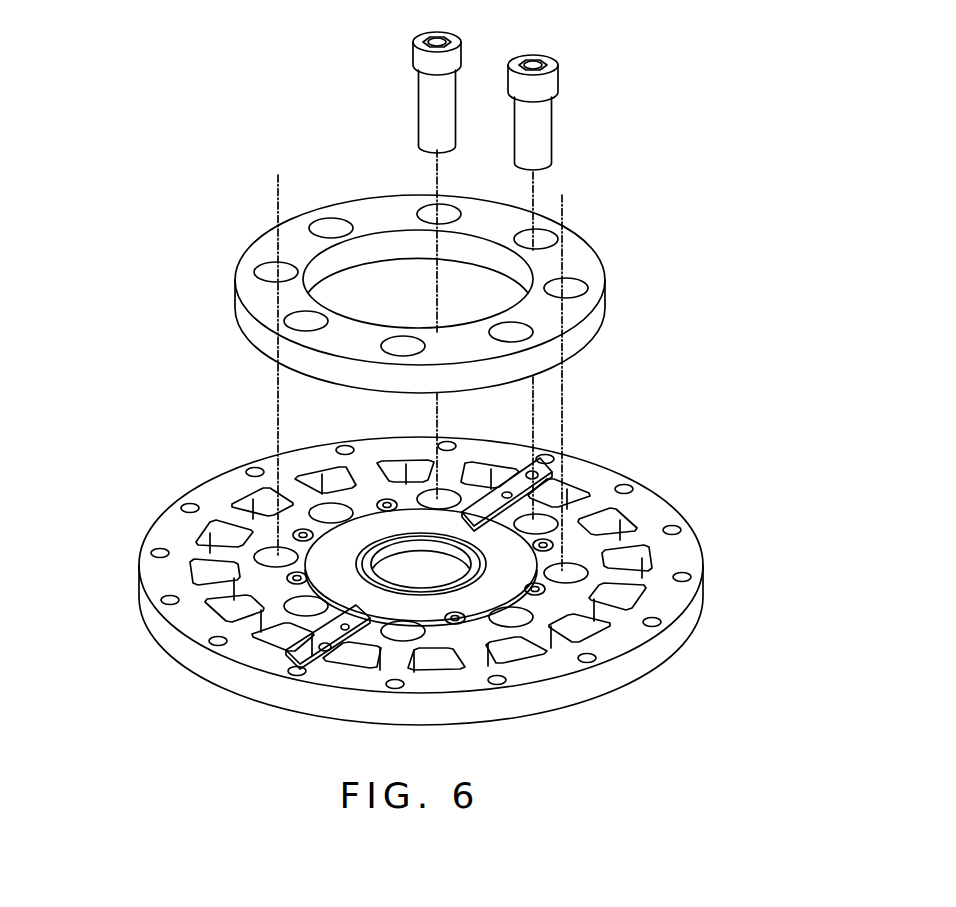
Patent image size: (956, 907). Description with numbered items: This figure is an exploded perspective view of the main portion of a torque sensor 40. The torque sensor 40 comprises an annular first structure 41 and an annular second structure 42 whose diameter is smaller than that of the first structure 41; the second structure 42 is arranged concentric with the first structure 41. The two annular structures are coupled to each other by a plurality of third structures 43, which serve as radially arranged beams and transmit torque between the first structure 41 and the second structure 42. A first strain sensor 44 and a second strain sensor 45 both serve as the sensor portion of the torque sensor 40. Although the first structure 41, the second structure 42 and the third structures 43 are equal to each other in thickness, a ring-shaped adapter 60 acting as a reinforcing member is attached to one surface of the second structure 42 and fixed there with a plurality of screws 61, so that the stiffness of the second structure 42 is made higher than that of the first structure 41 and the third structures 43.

The torque sensor 40 is at (370, 568).
The first structure 41 is at (150, 575).
The second structure 42 is at (267, 530).
The third structures 43 is at (198, 545).
The first strain sensor 44 is at (516, 465).
The second strain sensor 45 is at (296, 603).
The adapter 60 is at (262, 254).
The screws 61 is at (445, 130).